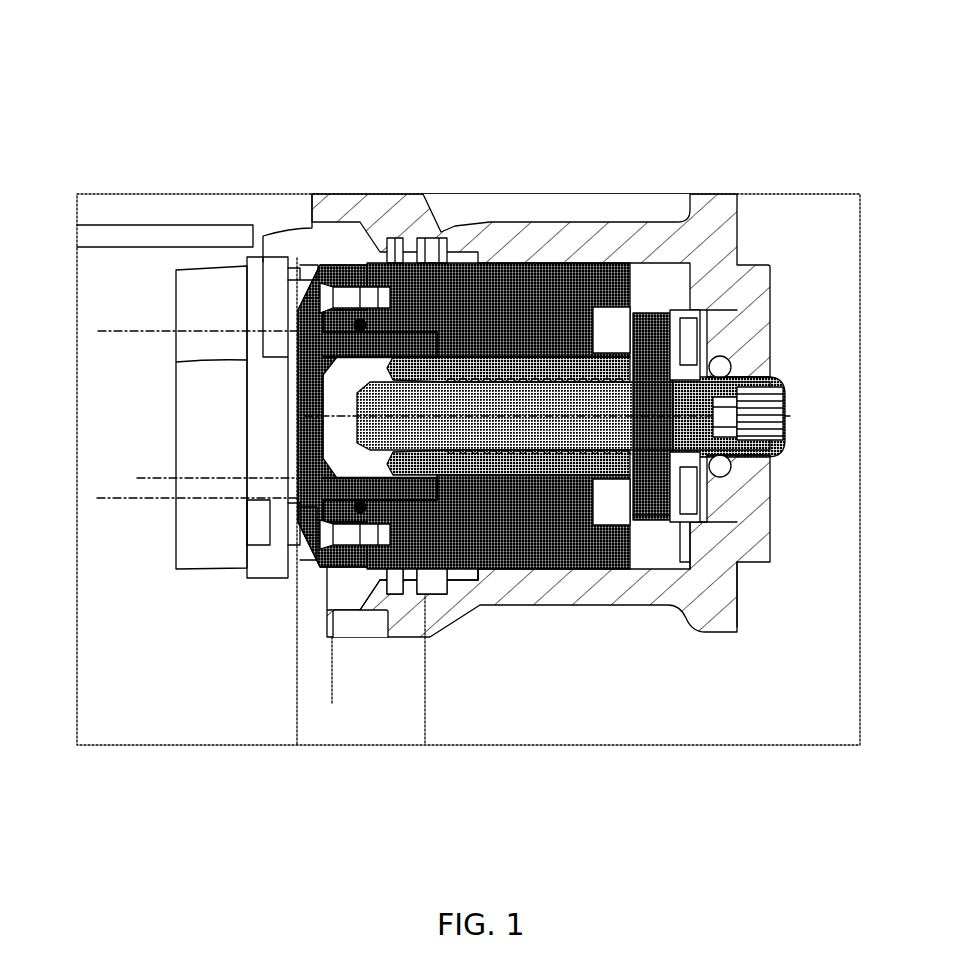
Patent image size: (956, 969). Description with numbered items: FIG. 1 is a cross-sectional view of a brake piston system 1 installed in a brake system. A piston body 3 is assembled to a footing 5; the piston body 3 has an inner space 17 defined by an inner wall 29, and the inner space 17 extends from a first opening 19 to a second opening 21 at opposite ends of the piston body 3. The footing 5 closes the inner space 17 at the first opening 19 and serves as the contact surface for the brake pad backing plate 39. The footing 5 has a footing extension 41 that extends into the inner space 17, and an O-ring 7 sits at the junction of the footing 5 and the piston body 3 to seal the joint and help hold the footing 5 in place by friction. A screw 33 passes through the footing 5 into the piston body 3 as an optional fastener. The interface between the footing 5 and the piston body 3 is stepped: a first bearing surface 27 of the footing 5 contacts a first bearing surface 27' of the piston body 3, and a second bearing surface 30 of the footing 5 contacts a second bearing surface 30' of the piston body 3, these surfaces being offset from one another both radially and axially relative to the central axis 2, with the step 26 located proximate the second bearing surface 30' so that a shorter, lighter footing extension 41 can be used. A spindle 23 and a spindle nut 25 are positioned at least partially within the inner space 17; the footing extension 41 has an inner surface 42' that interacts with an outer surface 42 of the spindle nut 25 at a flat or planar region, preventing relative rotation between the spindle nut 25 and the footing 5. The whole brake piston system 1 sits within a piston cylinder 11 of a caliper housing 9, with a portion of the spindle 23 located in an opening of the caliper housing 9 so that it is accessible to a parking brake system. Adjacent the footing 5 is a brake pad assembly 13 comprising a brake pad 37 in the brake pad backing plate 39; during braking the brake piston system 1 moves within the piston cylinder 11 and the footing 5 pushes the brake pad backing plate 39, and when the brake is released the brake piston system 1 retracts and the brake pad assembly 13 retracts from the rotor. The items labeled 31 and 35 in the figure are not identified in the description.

The brake piston system 1 is at (493, 222).
The central axis 2 is at (265, 415).
The piston body 3 is at (555, 230).
The footing 5 is at (292, 300).
The O-ring 7 is at (360, 270).
The caliper housing 9 is at (607, 595).
The piston cylinder 11 is at (650, 552).
The brake pad assembly 13 is at (220, 257).
The inner space 17 is at (388, 560).
The first opening 19 is at (310, 560).
The second opening 21 is at (630, 517).
The spindle 23 is at (707, 317).
The spindle nut 25 is at (597, 263).
The step 26 is at (462, 565).
The first bearing surface of the footing 27 is at (417, 312).
The first bearing surface of the piston body 27' is at (451, 301).
The inner wall 29 is at (640, 570).
The second bearing surface of the footing 30 is at (340, 663).
The second bearing surface of the piston body 30' is at (351, 706).
The bolt 31 is at (425, 597).
The screw 33 is at (335, 282).
The spacer 35 is at (370, 270).
The brake pad 37 is at (210, 532).
The brake pad backing plate 39 is at (267, 555).
The footing extension 41 is at (298, 420).
The outer surface of the spindle nut 42 is at (631, 416).
The inner surface of the footing extension 42' is at (663, 455).